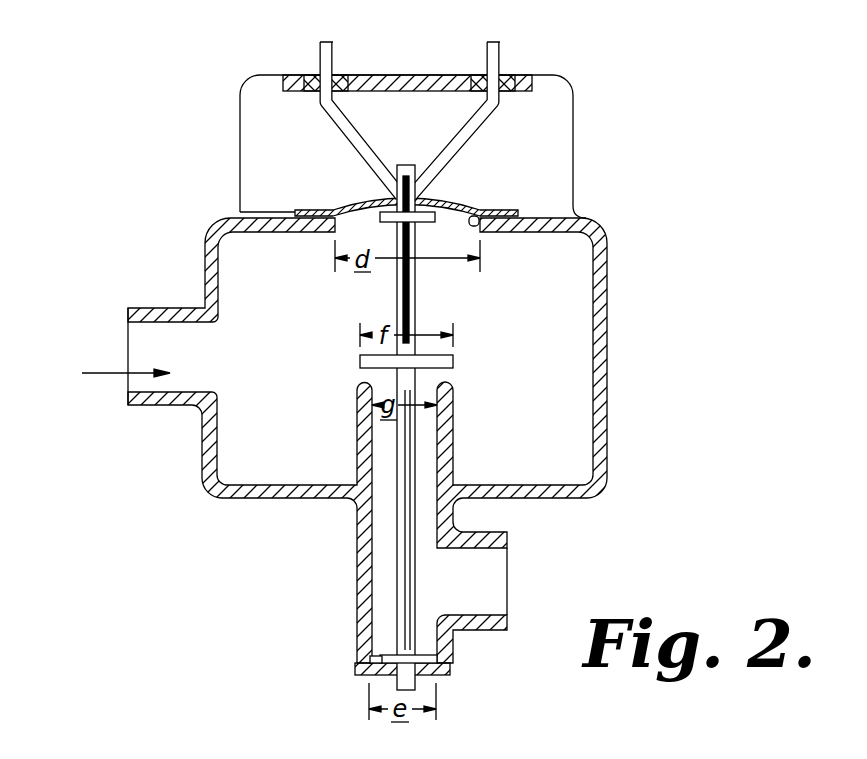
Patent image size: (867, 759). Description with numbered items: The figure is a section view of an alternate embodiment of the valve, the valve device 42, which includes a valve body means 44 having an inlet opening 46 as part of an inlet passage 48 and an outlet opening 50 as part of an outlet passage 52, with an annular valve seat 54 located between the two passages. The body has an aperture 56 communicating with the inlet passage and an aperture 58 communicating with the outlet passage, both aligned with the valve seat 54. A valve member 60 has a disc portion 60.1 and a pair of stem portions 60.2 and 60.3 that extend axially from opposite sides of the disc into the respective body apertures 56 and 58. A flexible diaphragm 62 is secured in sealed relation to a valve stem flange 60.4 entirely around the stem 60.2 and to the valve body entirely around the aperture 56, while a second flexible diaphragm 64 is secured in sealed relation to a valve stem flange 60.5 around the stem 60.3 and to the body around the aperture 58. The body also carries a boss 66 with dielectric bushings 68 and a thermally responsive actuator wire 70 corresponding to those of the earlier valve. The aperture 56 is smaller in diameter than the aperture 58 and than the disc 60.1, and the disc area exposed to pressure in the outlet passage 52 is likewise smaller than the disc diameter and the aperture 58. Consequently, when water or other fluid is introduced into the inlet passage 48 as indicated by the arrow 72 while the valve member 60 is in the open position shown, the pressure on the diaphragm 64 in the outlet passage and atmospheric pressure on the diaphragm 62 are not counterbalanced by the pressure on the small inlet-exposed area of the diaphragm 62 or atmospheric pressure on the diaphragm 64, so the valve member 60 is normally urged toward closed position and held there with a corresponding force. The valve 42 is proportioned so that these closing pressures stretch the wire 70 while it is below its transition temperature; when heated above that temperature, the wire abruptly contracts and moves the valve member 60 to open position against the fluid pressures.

The valve device 42 is at (622, 212).
The valve body means 44 is at (606, 323).
The inlet opening 46 is at (128, 338).
The inlet passage 48 is at (280, 354).
The outlet opening 50 is at (508, 581).
The outlet passage 52 is at (472, 597).
The annular valve seat 54 is at (452, 384).
The body aperture 56 is at (478, 216).
The body aperture 58 is at (372, 660).
The valve member 60 is at (386, 427).
The disc portion 60.1 is at (455, 360).
The stem portion 60.2 is at (396, 298).
The stem portion 60.3 is at (397, 506).
The valve stem flange 60.4 is at (426, 210).
The valve stem flange 60.5 is at (438, 658).
The flexible diaphragm 62 is at (338, 208).
The second flexible diaphragm 64 is at (366, 673).
The boss 66 is at (230, 127).
The dielectric bushings 68 is at (500, 78).
The thermally responsive actuator wire 70 is at (322, 134).
The arrow 72 is at (104, 382).